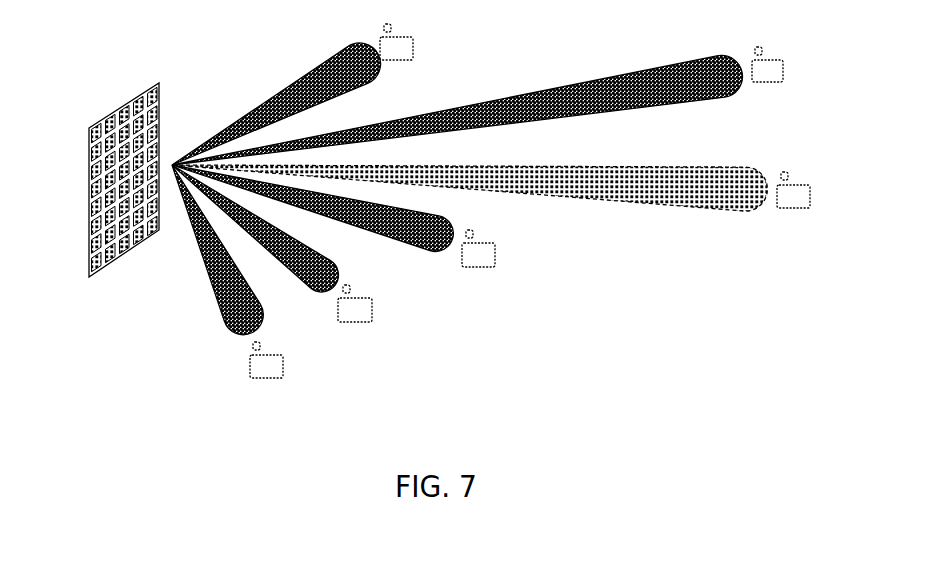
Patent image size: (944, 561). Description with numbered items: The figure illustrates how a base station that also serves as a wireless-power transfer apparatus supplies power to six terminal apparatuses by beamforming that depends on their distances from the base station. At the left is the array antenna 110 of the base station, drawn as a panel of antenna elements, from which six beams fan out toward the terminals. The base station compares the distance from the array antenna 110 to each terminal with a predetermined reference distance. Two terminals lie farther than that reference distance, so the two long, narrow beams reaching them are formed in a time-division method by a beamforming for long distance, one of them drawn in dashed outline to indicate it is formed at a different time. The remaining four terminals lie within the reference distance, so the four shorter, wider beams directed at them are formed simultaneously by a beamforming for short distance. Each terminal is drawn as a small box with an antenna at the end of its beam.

The array antenna 110 is at (110, 100).